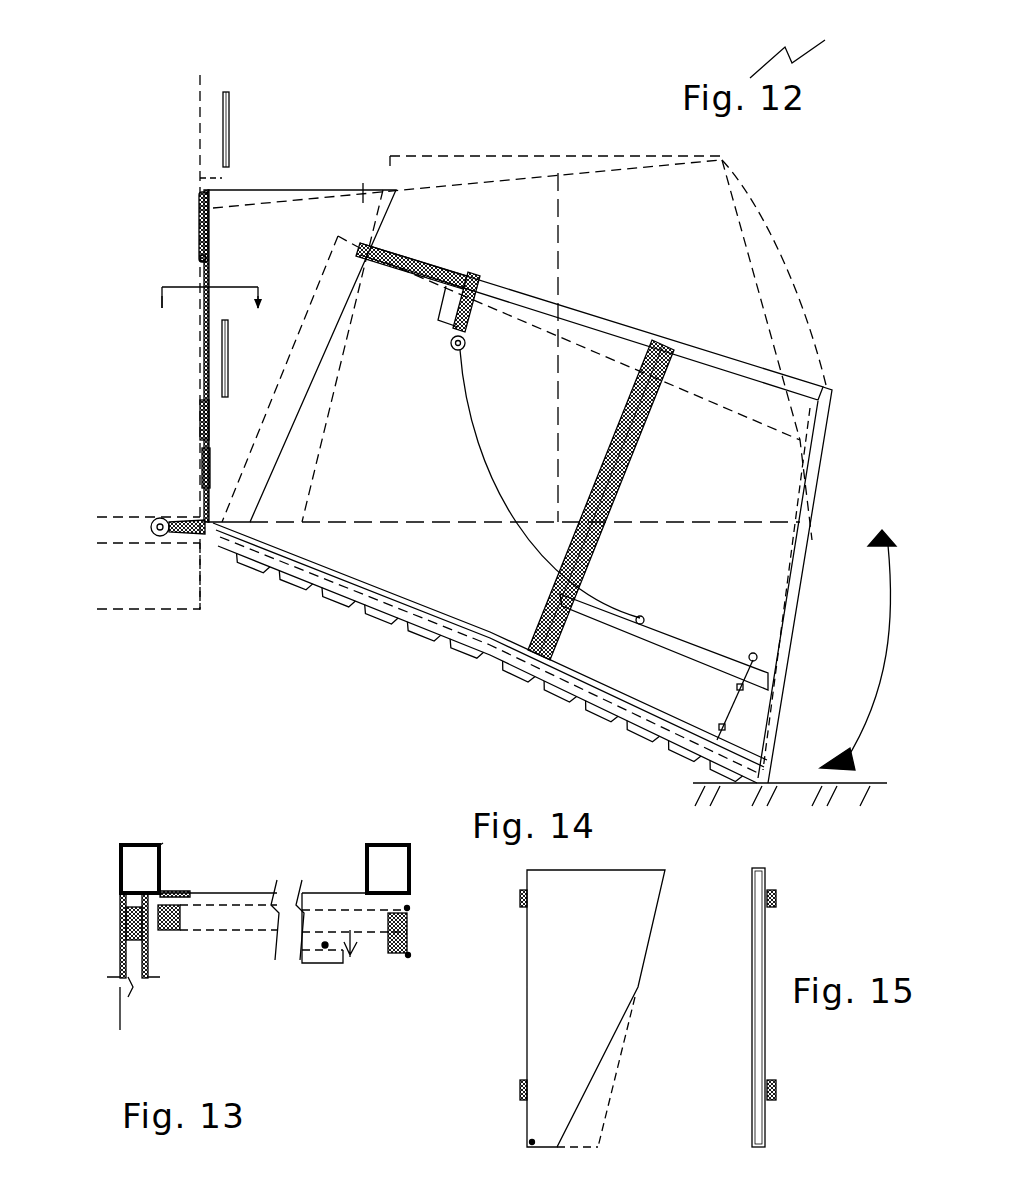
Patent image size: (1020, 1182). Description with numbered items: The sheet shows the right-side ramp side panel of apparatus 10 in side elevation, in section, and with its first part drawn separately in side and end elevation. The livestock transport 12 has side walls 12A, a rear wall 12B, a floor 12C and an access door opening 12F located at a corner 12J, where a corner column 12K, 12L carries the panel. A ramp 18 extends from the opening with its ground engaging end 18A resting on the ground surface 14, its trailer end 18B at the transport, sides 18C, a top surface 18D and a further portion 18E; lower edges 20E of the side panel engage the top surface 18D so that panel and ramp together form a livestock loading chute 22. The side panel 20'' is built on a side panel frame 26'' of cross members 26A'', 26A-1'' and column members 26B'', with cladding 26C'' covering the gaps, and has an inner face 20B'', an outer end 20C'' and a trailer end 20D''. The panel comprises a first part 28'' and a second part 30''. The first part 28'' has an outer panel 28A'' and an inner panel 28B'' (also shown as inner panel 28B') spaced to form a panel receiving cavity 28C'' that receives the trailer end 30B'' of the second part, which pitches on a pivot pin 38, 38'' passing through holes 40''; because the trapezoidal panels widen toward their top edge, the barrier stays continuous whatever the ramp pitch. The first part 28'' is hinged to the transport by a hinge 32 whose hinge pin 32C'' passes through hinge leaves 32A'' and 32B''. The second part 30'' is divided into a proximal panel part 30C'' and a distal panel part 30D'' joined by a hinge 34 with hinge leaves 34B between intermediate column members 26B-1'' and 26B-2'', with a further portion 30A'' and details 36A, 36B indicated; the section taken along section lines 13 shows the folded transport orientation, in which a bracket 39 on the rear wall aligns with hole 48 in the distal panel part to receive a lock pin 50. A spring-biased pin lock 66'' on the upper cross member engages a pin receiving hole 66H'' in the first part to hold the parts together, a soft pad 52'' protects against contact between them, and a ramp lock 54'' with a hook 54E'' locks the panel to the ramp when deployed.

In FIG. 12, the apparatus 10 is at (807, 44).
In FIG. 12, the livestock transport 12 is at (203, 82).
In FIG. 13, the livestock transport 12 is at (340, 897).
In FIG. 13, the side wall 12A is at (121, 870).
In FIG. 12, the rear wall 12B is at (200, 125).
In FIG. 12, the floor 12C is at (97, 515).
In FIG. 13, the access door opening 12F is at (188, 1010).
In FIG. 12, the corner 12J is at (342, 175).
In FIG. 13, the corner 12J is at (105, 958).
In FIG. 12, the corner column 12K is at (205, 180).
In FIG. 13, the corner column 12K is at (163, 845).
In FIG. 13, the frame surface 12L is at (161, 844).
In FIG. 12, the section lines 13 is at (204, 282).
In FIG. 12, the ground surface 14 is at (705, 790).
In FIG. 12, the ramp 18 is at (405, 623).
In FIG. 12, the ground engaging end 18A is at (767, 763).
In FIG. 12, the trailer end 18B is at (108, 551).
In FIG. 12, the sides 18C is at (342, 592).
In FIG. 12, the top surface 18D is at (457, 630).
In FIG. 12, the floor beam tooth 18E is at (540, 688).
In FIG. 12, the side panel 20'' is at (512, 276).
In FIG. 12, the inner face 20B'' is at (389, 381).
In FIG. 12, the outer end 20C'' is at (806, 270).
In FIG. 12, the trailer end 20D'' is at (155, 217).
In FIG. 13, the trailer end 20D'' is at (79, 847).
In FIG. 12, the lower edge 20E is at (627, 716).
In FIG. 12, the livestock loading chute 22 is at (490, 155).
In FIG. 12, the side panel frame 26'' is at (591, 309).
In FIG. 12, the cross member 26A'' is at (448, 375).
In FIG. 12, the cross member 26A-1'' is at (664, 633).
In FIG. 12, the column member 26B'' is at (876, 440).
In FIG. 12, the intermediate column member 26B-1'' is at (600, 394).
In FIG. 13, the intermediate column member 26B-1'' is at (464, 916).
In FIG. 12, the intermediate column member 26B-2'' is at (696, 432).
In FIG. 13, the intermediate column member 26B-2'' is at (464, 961).
In FIG. 12, the cladding 26C'' is at (514, 436).
In FIG. 12, the first part 28'' is at (302, 332).
In FIG. 14, the first part 28'' is at (596, 985).
In FIG. 15, the first part 28'' is at (795, 1007).
In FIG. 12, the outer panel 28A'' is at (434, 98).
In FIG. 13, the outer panel 28A'' is at (95, 1007).
In FIG. 14, the outer panel 28A'' is at (644, 1009).
In FIG. 15, the outer panel 28A'' is at (716, 977).
In FIG. 12, the inner panel 28B'' is at (260, 356).
In FIG. 13, the inner panel 28B'' is at (107, 961).
In FIG. 15, the inner panel 28B'' is at (818, 1029).
In FIG. 12, the inner panel 28B' is at (324, 356).
In FIG. 13, the panel receiving cavity 28C'' is at (104, 1062).
In FIG. 12, the second part 30'' is at (676, 419).
In FIG. 12, the tailgate top 30A'' is at (889, 363).
In FIG. 12, the trailer end 30B'' is at (188, 371).
In FIG. 12, the proximal panel part 30C'' is at (210, 583).
In FIG. 13, the proximal panel part 30C'' is at (416, 1006).
In FIG. 12, the distal panel part 30D'' is at (820, 589).
In FIG. 13, the distal panel part 30D'' is at (419, 968).
In FIG. 12, the hinge 32 is at (194, 192).
In FIG. 13, the hinge 32 is at (170, 905).
In FIG. 12, the hinge leaf 32A'' is at (147, 460).
In FIG. 14, the hinge leaf 32A'' is at (483, 995).
In FIG. 15, the hinge leaf 32A'' is at (811, 995).
In FIG. 12, the hinge leaf 32B'' is at (161, 416).
In FIG. 12, the hinge pin 32C'' is at (276, 205).
In FIG. 13, the hinge pin 32C'' is at (241, 836).
In FIG. 12, the hinge 34 is at (614, 500).
In FIG. 13, the hinge 34 is at (403, 931).
In FIG. 12, the hinge leaves 34B is at (664, 343).
In FIG. 13, the fastener 36A is at (410, 909).
In FIG. 13, the fastener 36B is at (409, 956).
In FIG. 13, the pivot pin 38 is at (161, 982).
In FIG. 12, the pivot pin 38'' is at (300, 493).
In FIG. 13, the pivot pin 38'' is at (150, 842).
In FIG. 13, the bracket 39 is at (320, 963).
In FIG. 13, the holes 40'' is at (97, 894).
In FIG. 14, the holes 40'' is at (487, 1140).
In FIG. 15, the holes 40'' is at (780, 1130).
In FIG. 13, the hole 48 is at (363, 940).
In FIG. 13, the lock pin 50 is at (325, 942).
In FIG. 12, the pad 52'' is at (418, 271).
In FIG. 12, the ramp lock 54'' is at (709, 696).
In FIG. 12, the hook 54E'' is at (671, 780).
In FIG. 12, the spring-biased pin lock 66'' is at (545, 317).
In FIG. 12, the pin receiving hole 66H'' is at (432, 125).